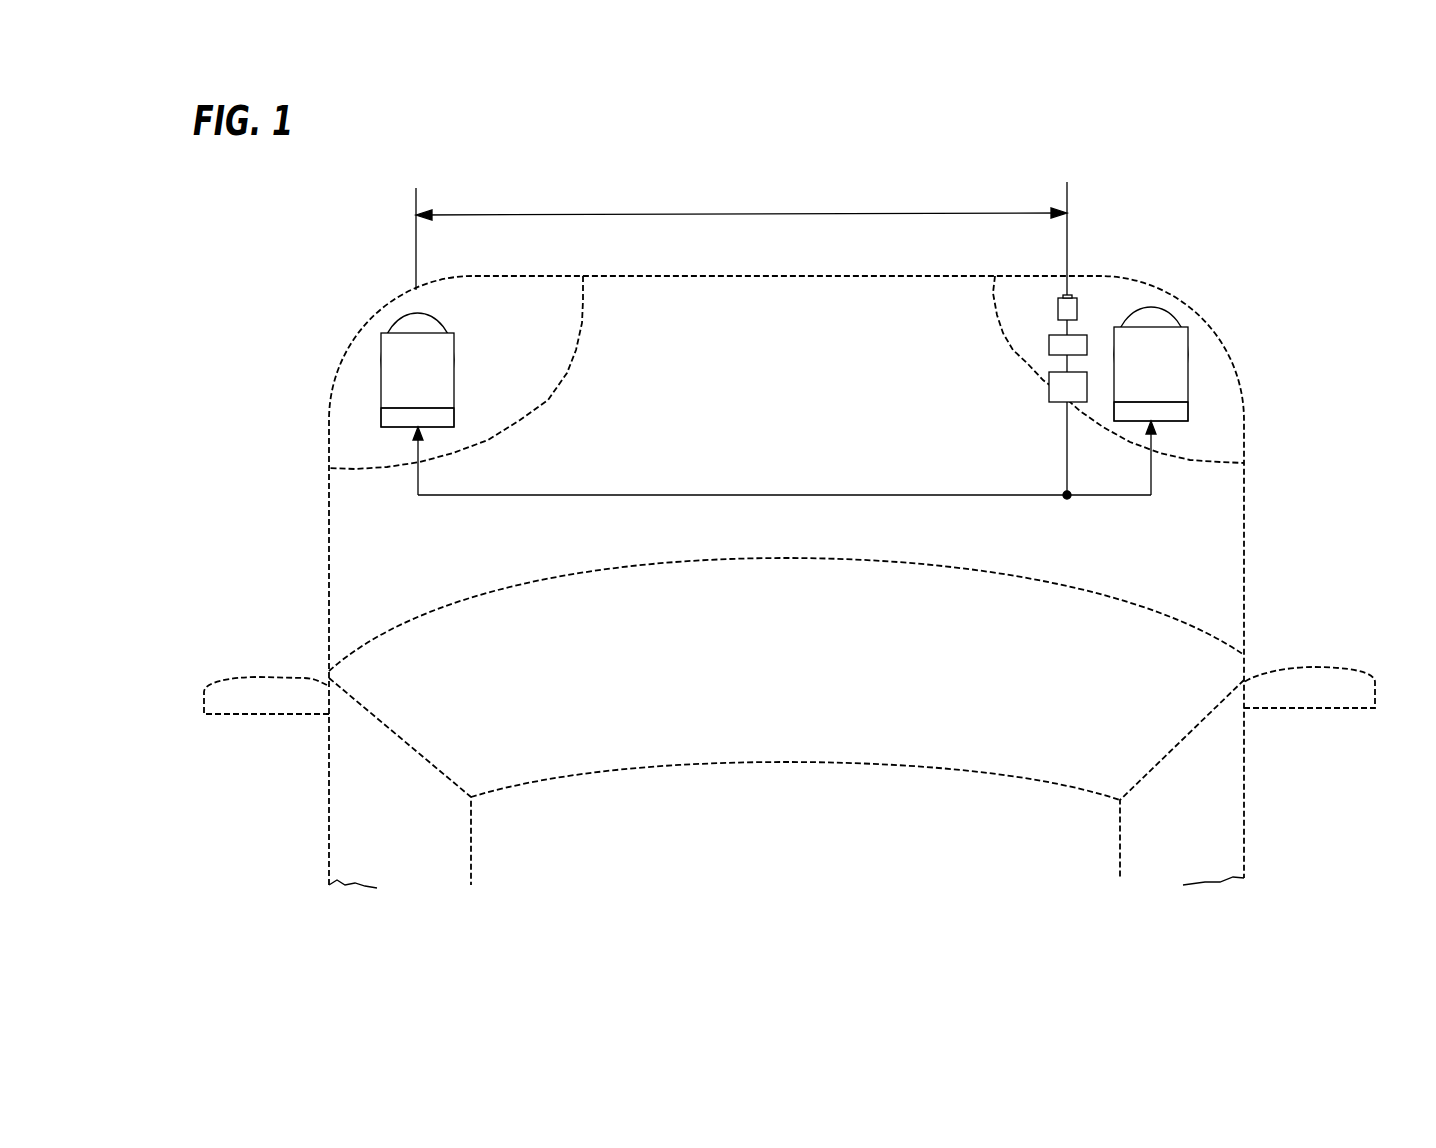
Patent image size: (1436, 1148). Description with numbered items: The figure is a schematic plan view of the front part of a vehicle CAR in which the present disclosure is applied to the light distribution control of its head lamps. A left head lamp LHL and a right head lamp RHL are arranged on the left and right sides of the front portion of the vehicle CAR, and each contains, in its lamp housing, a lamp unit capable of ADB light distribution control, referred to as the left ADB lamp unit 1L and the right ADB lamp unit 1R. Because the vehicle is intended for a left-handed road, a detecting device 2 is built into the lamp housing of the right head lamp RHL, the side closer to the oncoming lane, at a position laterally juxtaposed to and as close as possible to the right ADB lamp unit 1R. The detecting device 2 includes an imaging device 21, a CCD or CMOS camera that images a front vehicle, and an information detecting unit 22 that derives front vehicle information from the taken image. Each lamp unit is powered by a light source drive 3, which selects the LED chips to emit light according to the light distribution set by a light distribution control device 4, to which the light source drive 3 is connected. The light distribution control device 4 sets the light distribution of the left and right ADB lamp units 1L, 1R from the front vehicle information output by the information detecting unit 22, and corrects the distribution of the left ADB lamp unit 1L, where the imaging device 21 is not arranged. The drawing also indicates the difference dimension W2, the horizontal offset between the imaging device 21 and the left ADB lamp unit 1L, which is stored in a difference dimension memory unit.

The vehicle CAR is at (326, 604).
The left head lamp LHL is at (371, 340).
The right head lamp RHL is at (1195, 332).
The left ADB lamp unit 1L is at (390, 331).
The right ADB lamp unit 1R is at (1190, 323).
The detecting device 2 is at (1036, 343).
The imaging device 21 is at (1057, 313).
The information detecting unit 22 is at (1048, 345).
The light source drive 3 is at (446, 418).
The light distribution control device 4 is at (1049, 397).
The difference dimension W2 is at (741, 224).